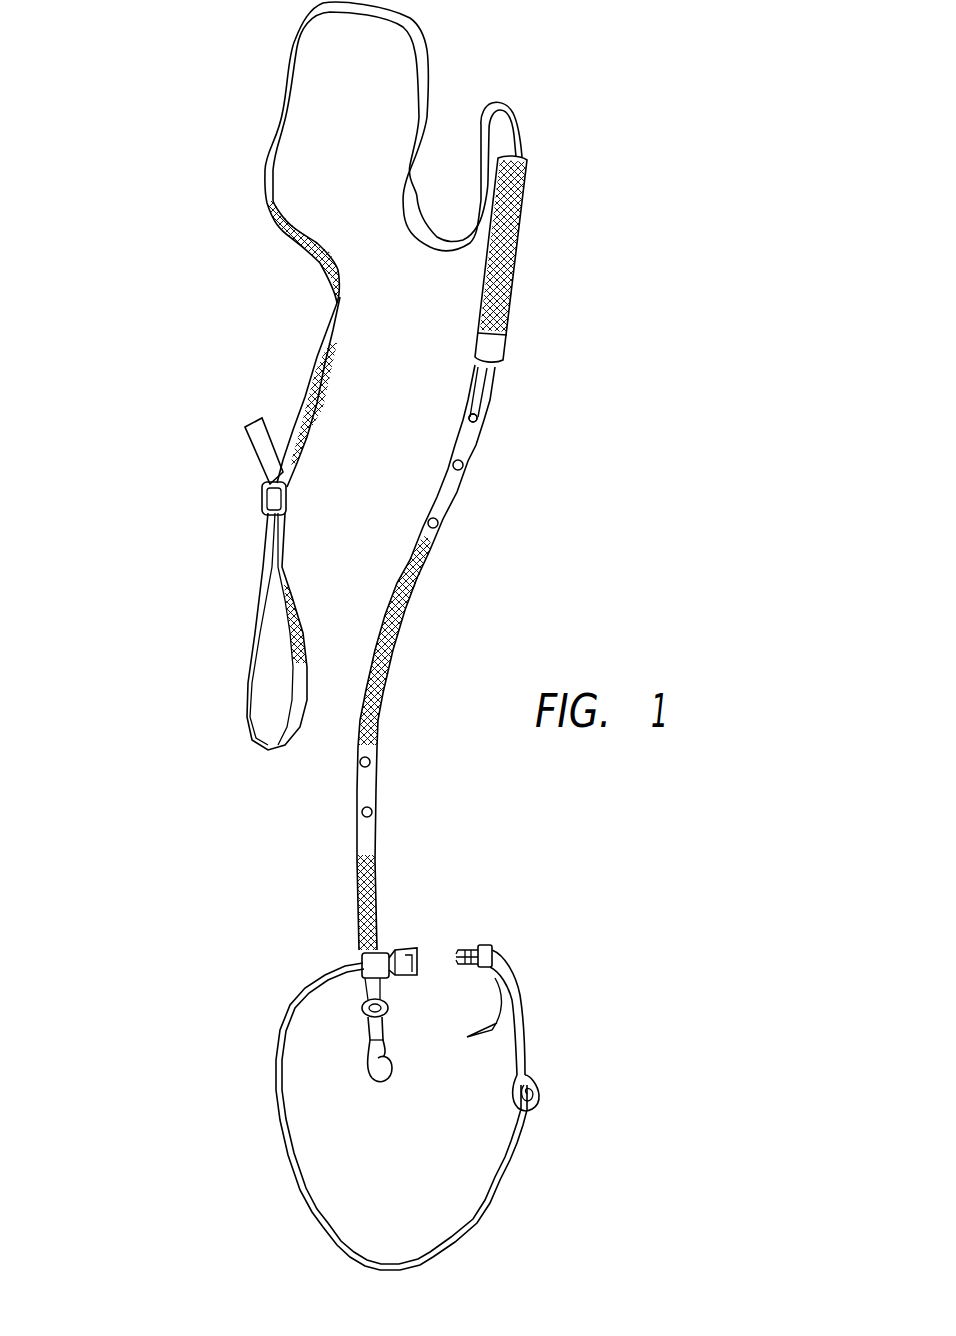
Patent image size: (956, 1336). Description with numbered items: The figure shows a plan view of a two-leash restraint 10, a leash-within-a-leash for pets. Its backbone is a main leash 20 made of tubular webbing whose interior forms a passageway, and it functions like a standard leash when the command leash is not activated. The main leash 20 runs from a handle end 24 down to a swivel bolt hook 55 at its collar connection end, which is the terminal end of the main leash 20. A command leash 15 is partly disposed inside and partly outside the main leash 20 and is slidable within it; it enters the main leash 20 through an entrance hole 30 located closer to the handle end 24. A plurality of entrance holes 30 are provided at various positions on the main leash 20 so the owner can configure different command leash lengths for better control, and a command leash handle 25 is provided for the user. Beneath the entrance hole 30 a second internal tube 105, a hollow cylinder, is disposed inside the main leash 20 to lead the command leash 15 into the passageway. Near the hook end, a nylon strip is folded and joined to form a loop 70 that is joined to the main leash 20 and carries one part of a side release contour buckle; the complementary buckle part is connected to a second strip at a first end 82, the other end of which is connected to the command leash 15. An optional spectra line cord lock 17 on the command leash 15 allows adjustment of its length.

The two-leash restraint 10 is at (156, 104).
The command leash 15 is at (277, 1098).
The spectra line cord lock 17 is at (527, 1100).
The main leash 20 is at (302, 362).
The handle end 24 is at (251, 663).
The command leash handle 25 is at (513, 257).
The entrance hole 30 is at (473, 420).
The swivel bolt hook 55 is at (392, 1062).
The loop 70 is at (380, 955).
The first end 82 is at (490, 948).
The second internal tube 105 is at (478, 418).